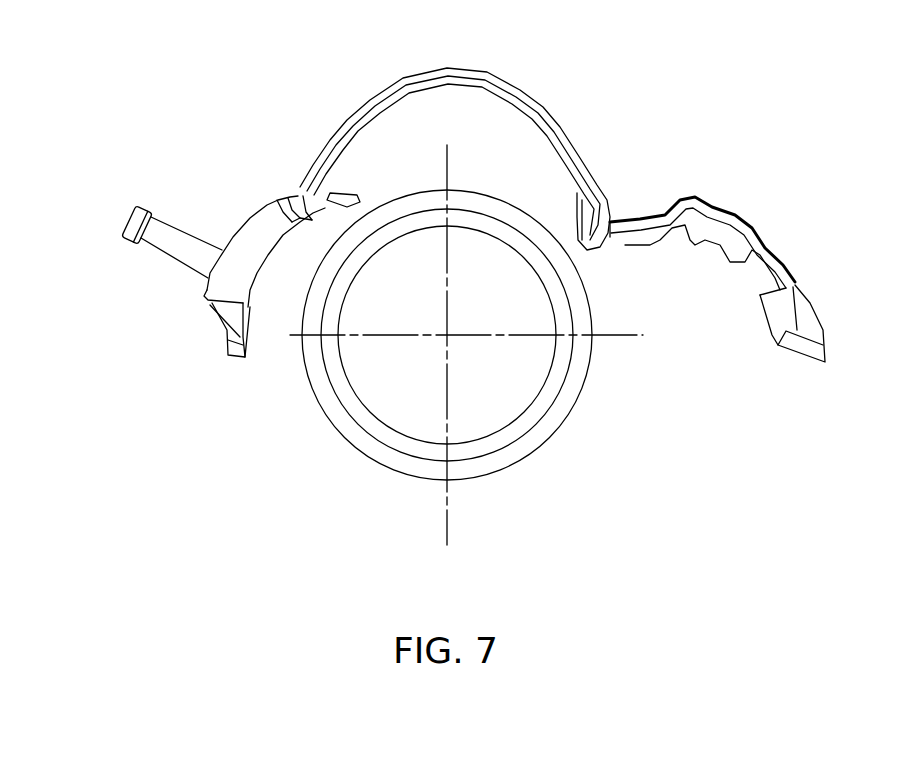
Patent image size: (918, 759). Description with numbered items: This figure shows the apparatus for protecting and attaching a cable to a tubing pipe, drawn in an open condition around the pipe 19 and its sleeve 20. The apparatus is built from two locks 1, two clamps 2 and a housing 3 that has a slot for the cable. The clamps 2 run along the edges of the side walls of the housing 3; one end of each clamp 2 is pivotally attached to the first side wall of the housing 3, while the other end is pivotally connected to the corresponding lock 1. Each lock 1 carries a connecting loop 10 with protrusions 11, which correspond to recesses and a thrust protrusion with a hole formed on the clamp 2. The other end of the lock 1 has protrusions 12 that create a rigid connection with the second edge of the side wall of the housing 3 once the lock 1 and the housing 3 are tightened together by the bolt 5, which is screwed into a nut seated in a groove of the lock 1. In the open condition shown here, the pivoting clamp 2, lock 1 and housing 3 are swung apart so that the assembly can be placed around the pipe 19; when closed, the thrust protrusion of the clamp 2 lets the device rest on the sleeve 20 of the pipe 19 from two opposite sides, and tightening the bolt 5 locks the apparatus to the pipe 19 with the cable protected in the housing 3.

The lock 1 is at (205, 293).
The clamp 2 is at (550, 100).
The housing 3 is at (775, 295).
The bolt 5 is at (172, 240).
The connecting loop 10 is at (300, 192).
The protrusion 11 is at (333, 200).
The protrusion 12 is at (233, 348).
The pipe 19 is at (550, 387).
The sleeve 20 is at (400, 457).